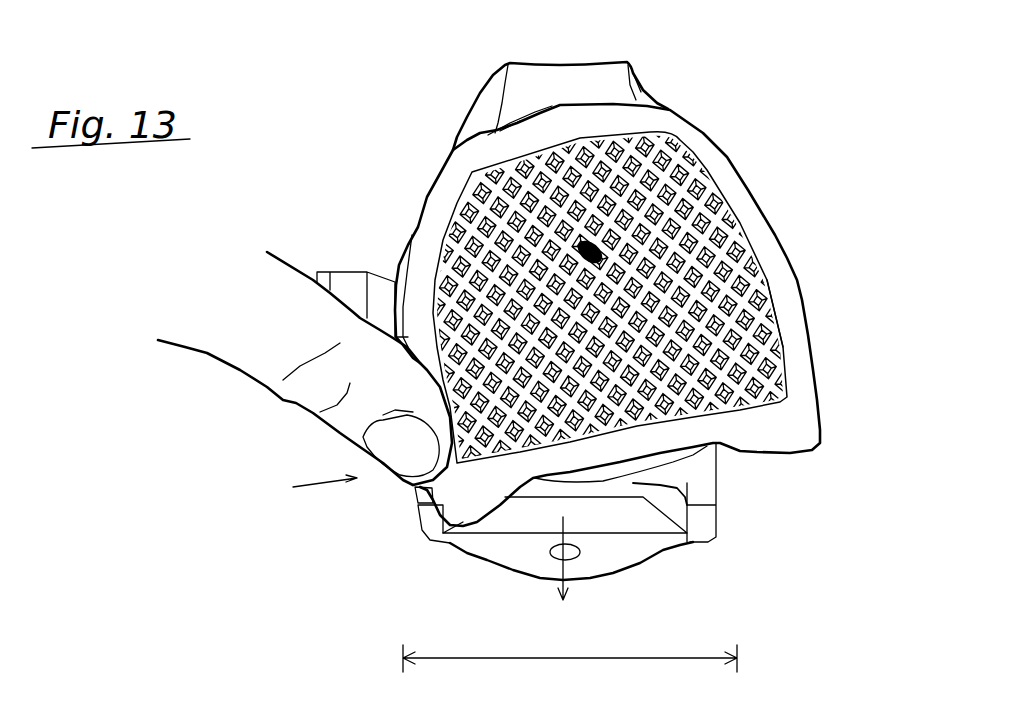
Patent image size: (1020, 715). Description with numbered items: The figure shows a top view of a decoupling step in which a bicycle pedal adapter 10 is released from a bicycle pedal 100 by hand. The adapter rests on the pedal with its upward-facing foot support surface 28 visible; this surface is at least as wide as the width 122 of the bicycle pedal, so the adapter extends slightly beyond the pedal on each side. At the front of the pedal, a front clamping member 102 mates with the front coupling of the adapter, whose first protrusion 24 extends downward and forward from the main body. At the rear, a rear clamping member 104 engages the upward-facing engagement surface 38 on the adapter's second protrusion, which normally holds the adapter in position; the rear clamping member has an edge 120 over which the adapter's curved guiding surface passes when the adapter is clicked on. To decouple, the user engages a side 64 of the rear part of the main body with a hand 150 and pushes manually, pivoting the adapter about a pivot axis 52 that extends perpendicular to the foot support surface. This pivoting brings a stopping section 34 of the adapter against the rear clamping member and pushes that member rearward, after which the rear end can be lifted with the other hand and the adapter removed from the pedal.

The camera device 10 is at (770, 176).
The front clamping member 102 is at (600, 87).
The first protrusion 24 is at (527, 117).
The pivot axis 52 is at (667, 153).
The foot support surface 28 is at (768, 218).
The side of a rear part of the main body 64 is at (360, 353).
The hand 150 is at (257, 383).
The bicycle pedal 100 is at (413, 538).
The edge of the rear clamping member 120 is at (716, 508).
The engagement surface 38 is at (653, 460).
The housing bottom edge 34 is at (697, 447).
The rear clamping member 104 is at (605, 520).
The width of the bicycle pedal 122 is at (473, 655).